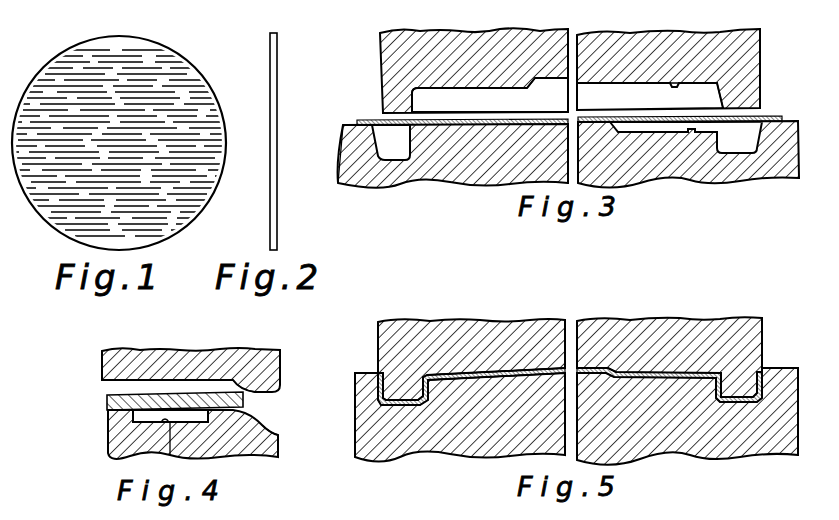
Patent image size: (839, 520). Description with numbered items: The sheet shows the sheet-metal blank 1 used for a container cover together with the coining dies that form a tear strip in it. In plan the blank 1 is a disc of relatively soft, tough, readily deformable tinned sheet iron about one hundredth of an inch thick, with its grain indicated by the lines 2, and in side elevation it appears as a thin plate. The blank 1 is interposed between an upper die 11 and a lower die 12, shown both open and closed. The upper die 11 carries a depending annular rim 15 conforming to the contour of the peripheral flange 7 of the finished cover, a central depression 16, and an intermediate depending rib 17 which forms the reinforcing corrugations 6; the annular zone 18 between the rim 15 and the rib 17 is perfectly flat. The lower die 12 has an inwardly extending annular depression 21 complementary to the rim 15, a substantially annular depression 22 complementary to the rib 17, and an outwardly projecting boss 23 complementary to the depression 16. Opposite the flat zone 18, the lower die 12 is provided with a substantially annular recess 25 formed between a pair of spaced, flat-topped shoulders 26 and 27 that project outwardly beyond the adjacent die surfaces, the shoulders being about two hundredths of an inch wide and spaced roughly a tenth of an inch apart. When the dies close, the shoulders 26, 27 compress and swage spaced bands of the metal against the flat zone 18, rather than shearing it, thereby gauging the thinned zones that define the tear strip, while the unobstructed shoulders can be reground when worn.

In FIG. 2, the blank 1 is at (270, 86).
In FIG. 3, the blank 1 is at (569, 120).
In FIG. 4, the blank 1 is at (108, 402).
In FIG. 5, the blank 1 is at (570, 386).
In FIG. 1, the grain 2 is at (160, 79).
In FIG. 5, the reinforcing corrugations 6 is at (462, 378).
In FIG. 5, the peripheral flange 7 is at (365, 455).
In FIG. 3, the upper die 11 is at (392, 56).
In FIG. 4, the upper die 11 is at (118, 356).
In FIG. 5, the upper die 11 is at (704, 327).
In FIG. 3, the lower die 12 is at (342, 164).
In FIG. 4, the lower die 12 is at (108, 452).
In FIG. 5, the lower die 12 is at (730, 437).
In FIG. 3, the annular rim 15 is at (397, 97).
In FIG. 5, the annular rim 15 is at (395, 390).
In FIG. 3, the central depression 16 is at (547, 94).
In FIG. 5, the central depression 16 is at (597, 362).
In FIG. 3, the intermediate depending rib 17 is at (498, 99).
In FIG. 4, the intermediate depending rib 17 is at (270, 392).
In FIG. 5, the intermediate depending rib 17 is at (462, 378).
In FIG. 3, the annular zone 18 is at (466, 93).
In FIG. 4, the annular zone 18 is at (106, 381).
In FIG. 3, the annular depression 21 is at (345, 176).
In FIG. 3, the annular depression 22 is at (464, 131).
In FIG. 4, the annular depression 22 is at (278, 433).
In FIG. 5, the annular depression 22 is at (462, 380).
In FIG. 3, the boss 23 is at (617, 119).
In FIG. 3, the annular recess 25 is at (440, 133).
In FIG. 4, the annular recess 25 is at (172, 452).
In FIG. 3, the shoulder 26 is at (425, 131).
In FIG. 4, the shoulder 26 is at (112, 418).
In FIG. 3, the shoulder 27 is at (455, 132).
In FIG. 4, the shoulder 27 is at (235, 412).